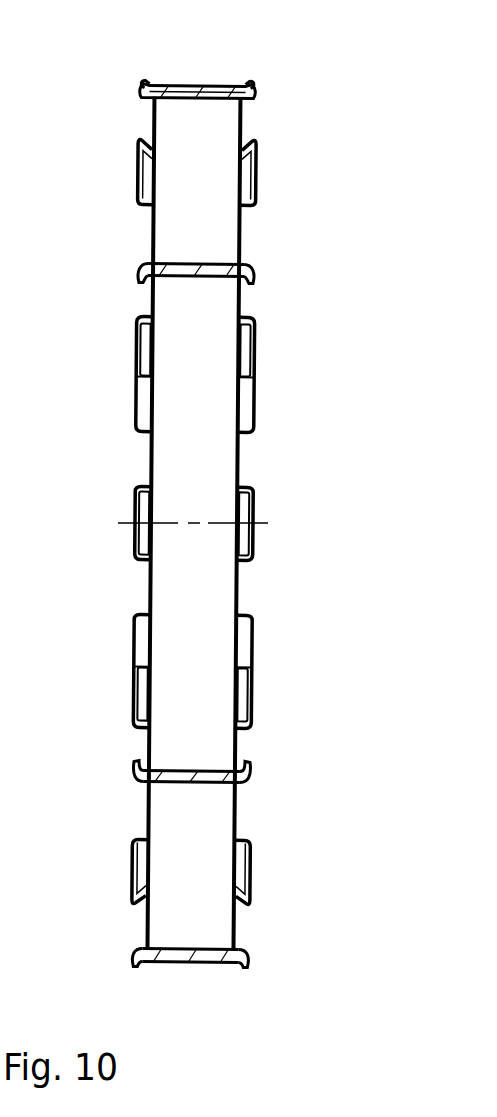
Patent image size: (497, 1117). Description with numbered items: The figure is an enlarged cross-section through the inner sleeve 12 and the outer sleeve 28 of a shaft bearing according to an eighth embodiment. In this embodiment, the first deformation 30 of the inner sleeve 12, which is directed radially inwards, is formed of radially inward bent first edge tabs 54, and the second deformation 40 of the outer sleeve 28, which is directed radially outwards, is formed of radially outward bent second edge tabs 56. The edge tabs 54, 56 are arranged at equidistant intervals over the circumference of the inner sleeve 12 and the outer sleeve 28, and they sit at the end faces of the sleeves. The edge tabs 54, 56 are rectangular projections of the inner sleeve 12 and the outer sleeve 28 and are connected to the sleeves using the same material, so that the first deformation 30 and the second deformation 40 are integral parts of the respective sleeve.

The inner sleeve 12 is at (243, 242).
The outer sleeve 28 is at (200, 92).
The first deformation 30 is at (138, 283).
The second deformation 40 is at (142, 83).
The first edge tabs 54 is at (141, 267).
The second edge tabs 56 is at (141, 96).